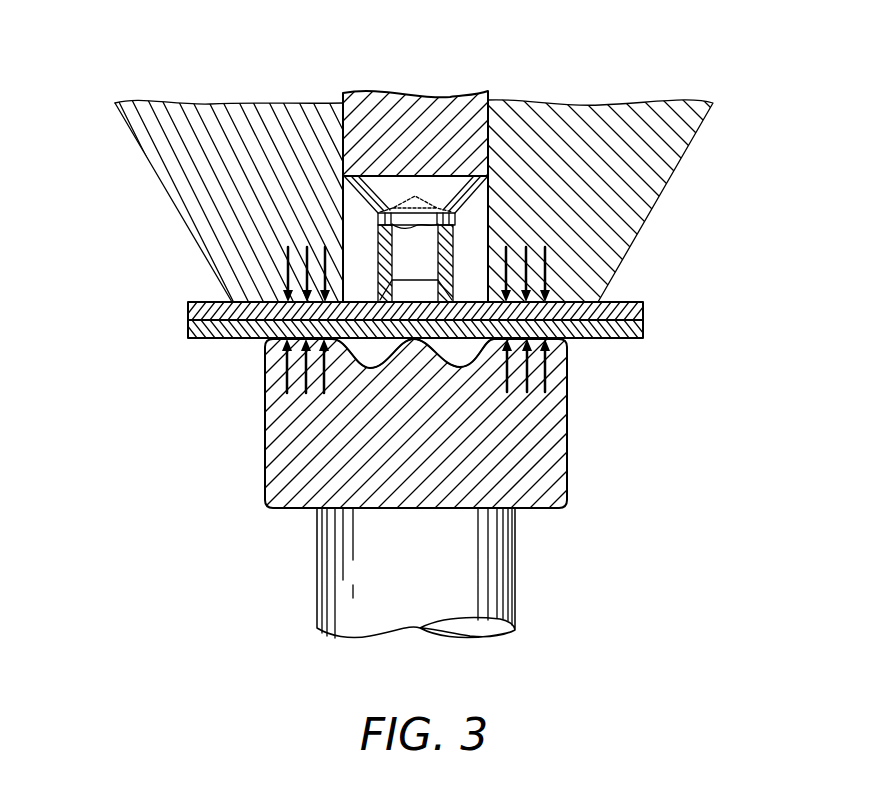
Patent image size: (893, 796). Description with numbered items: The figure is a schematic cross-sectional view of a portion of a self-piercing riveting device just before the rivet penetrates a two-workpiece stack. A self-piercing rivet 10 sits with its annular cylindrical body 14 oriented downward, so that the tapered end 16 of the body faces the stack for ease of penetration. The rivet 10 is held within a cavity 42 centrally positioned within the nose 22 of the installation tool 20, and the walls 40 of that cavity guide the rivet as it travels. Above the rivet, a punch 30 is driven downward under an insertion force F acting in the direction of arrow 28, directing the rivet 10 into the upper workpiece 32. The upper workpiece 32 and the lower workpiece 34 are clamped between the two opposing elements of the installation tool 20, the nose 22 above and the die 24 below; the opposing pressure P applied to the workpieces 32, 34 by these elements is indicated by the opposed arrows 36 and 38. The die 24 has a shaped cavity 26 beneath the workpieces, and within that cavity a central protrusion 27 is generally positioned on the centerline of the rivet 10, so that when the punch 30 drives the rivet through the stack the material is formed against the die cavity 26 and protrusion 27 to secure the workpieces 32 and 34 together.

The self-piercing rivet 10 is at (440, 166).
The annular cylindrical body 14 is at (455, 245).
The end of annular cylindrical body 16 is at (455, 293).
The installation tool 20 is at (141, 83).
The nose 22 is at (685, 160).
The die 24 is at (415, 487).
The shaped cavity 26 is at (377, 350).
The central protrusion 27 is at (457, 367).
The arrow 28 is at (433, 46).
The punch 30 is at (474, 96).
The workpiece 32 is at (647, 308).
The workpiece 34 is at (613, 332).
The arrows 36 is at (277, 267).
The arrows 38 is at (277, 368).
The walls of cavity 40 is at (355, 258).
The cavity 42 is at (352, 260).